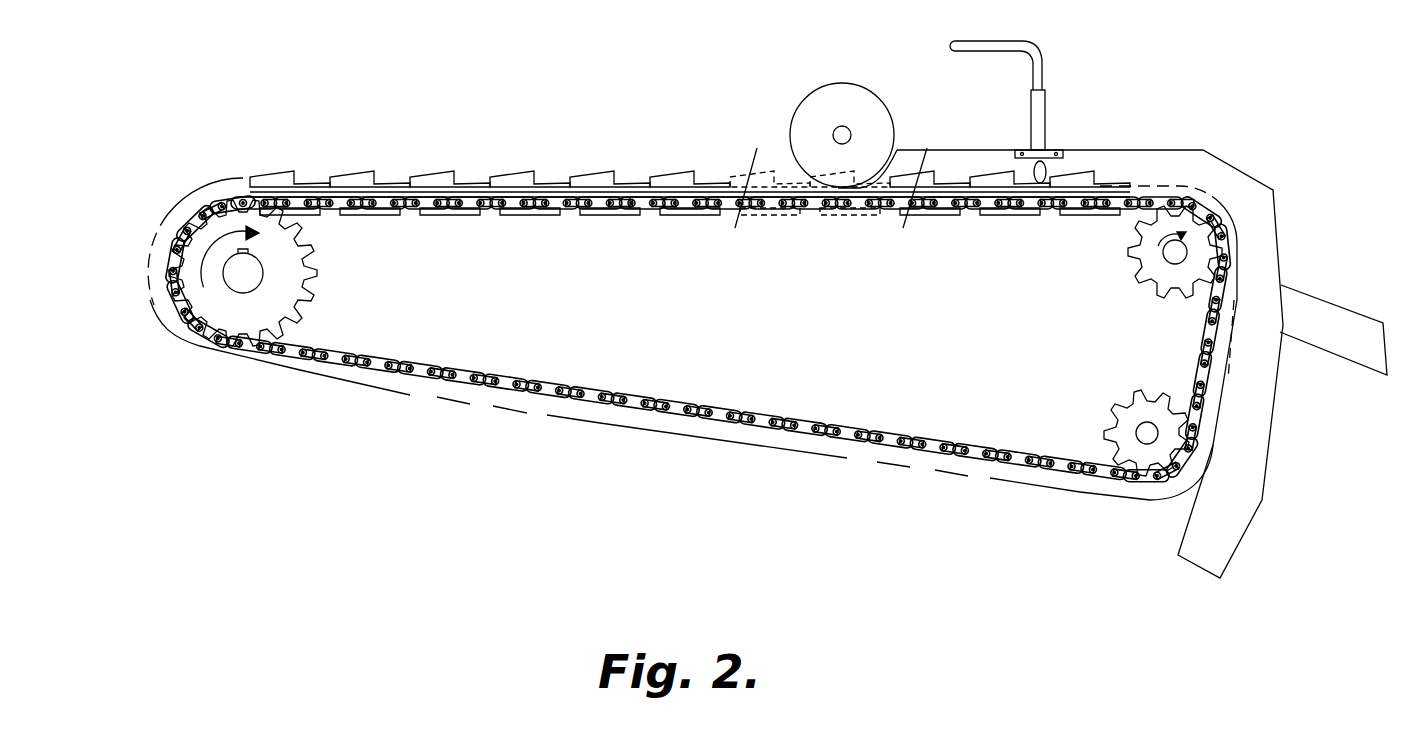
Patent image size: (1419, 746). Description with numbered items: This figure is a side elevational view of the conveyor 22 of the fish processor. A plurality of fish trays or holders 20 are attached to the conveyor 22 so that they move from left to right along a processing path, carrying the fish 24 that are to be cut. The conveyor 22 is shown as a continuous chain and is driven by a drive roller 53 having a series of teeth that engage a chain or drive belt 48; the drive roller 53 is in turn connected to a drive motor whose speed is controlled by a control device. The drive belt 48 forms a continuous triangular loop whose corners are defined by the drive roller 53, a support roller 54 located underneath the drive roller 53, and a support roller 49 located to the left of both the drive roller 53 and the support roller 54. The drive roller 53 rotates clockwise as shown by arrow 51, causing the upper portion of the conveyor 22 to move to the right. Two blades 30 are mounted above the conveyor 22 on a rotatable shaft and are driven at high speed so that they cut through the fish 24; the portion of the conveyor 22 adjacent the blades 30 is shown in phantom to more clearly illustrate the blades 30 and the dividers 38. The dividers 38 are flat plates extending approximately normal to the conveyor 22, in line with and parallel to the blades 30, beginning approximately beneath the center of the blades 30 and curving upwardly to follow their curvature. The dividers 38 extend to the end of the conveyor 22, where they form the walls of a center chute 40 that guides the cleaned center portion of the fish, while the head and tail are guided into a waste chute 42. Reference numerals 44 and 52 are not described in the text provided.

The fish trays or holders 20 is at (590, 160).
The conveyor 22 is at (940, 510).
The fish 24 is at (636, 180).
The blades 30 is at (830, 95).
The dividers 38 is at (1127, 162).
The center chute 40 is at (1343, 325).
The waste chute 42 is at (1268, 437).
The loading station 44 is at (710, 105).
The chain or drive belt 48 is at (583, 400).
The support roller 49 is at (222, 315).
The arrow 51 is at (1148, 250).
The handle 52 is at (1043, 115).
The drive roller 53 is at (1138, 265).
The support roller 54 is at (1124, 408).